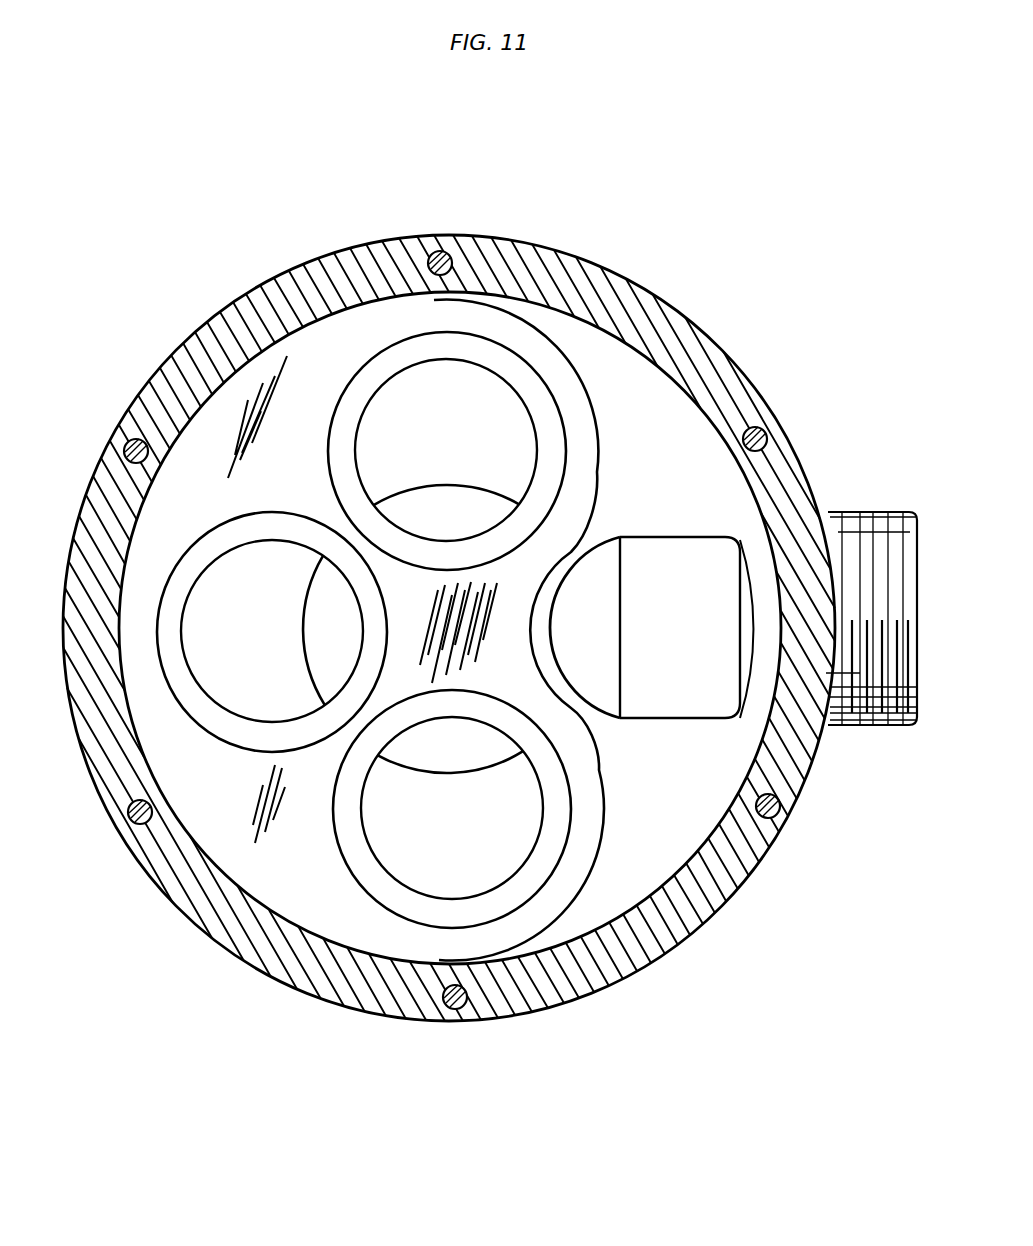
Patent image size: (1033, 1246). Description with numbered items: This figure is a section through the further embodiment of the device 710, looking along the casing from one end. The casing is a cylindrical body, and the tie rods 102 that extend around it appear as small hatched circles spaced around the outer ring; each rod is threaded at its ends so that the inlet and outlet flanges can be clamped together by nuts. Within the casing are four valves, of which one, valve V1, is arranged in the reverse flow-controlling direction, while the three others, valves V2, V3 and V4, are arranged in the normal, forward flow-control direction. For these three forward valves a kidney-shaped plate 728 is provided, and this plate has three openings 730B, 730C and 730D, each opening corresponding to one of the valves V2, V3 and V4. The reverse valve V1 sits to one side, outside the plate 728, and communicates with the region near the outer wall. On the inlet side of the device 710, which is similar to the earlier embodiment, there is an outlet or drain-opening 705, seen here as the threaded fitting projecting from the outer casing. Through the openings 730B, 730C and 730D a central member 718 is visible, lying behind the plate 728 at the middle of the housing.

The device 710 is at (282, 288).
The tie rod 102 is at (450, 1008).
The kidney-shaped plate 728 is at (570, 390).
The outlet or drain-opening 705 is at (868, 540).
The rotor 718 is at (466, 525).
The opening 730B is at (488, 837).
The opening 730C is at (258, 645).
The opening 730D is at (476, 430).
The valve V1 is at (733, 722).
The valve V2 is at (512, 917).
The valve V3 is at (170, 690).
The valve V4 is at (490, 340).